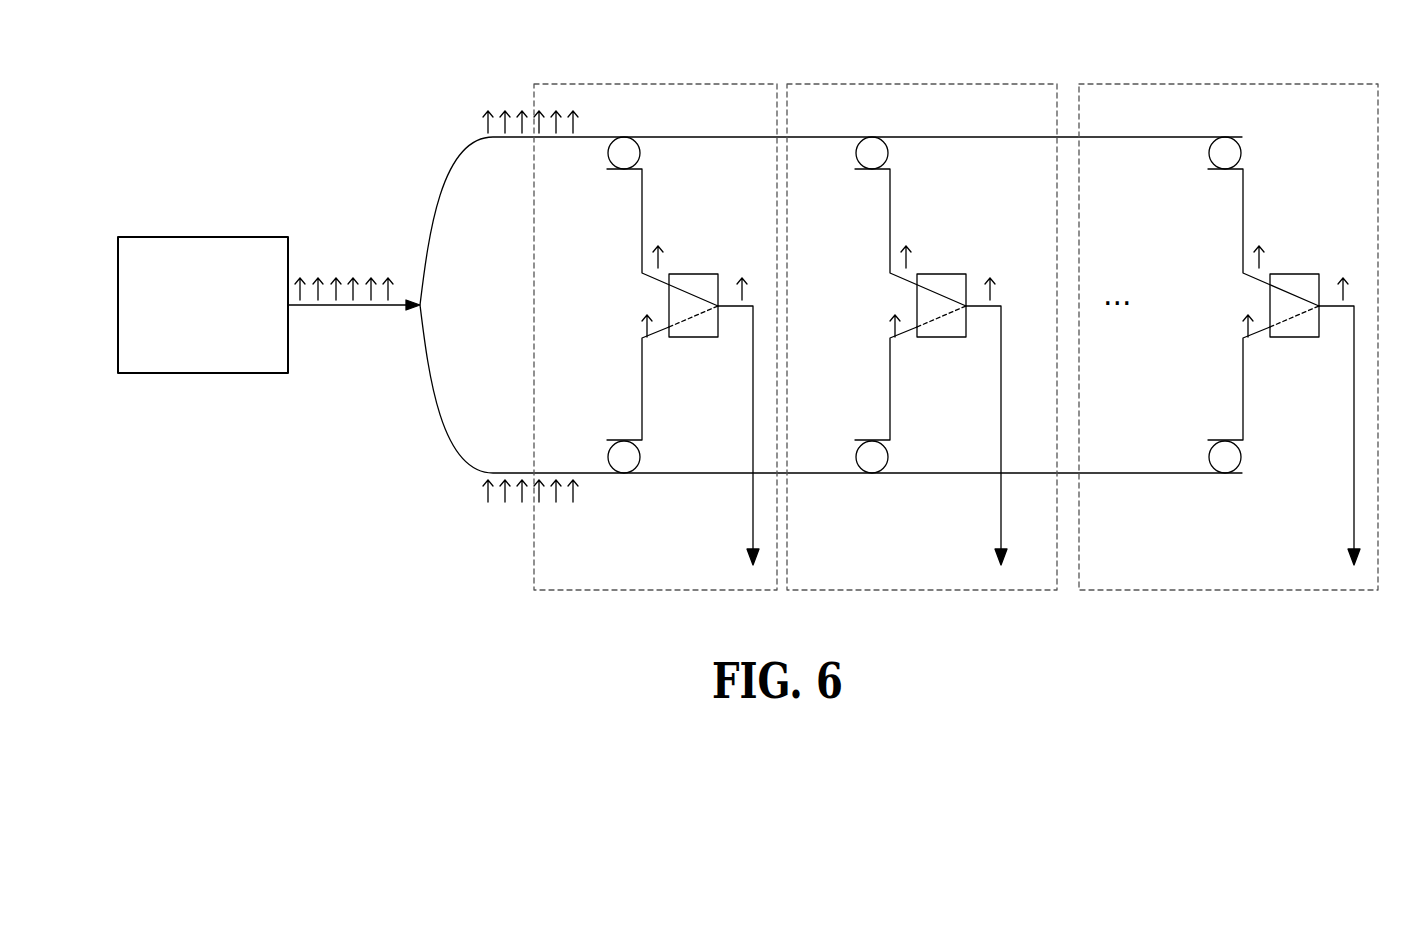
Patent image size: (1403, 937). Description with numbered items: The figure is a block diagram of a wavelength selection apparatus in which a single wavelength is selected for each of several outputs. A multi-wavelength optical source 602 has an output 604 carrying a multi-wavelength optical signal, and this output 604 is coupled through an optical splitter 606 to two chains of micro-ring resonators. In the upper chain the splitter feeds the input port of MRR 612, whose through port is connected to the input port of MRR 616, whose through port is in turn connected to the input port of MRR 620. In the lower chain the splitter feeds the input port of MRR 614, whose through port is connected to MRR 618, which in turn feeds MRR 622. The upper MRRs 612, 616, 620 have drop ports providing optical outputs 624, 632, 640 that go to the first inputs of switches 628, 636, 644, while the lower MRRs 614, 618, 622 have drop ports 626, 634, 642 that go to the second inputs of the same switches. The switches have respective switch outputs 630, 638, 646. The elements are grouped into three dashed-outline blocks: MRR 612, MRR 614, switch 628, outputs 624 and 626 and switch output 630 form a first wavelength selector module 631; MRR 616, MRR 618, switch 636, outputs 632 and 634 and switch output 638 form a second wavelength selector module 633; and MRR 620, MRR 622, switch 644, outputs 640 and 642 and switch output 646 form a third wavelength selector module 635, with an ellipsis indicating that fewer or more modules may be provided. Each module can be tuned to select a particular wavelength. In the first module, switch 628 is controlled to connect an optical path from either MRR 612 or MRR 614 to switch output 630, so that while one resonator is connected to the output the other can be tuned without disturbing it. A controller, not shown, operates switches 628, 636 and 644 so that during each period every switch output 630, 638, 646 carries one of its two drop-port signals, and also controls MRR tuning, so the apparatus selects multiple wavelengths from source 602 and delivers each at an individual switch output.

The multi-wavelength optical source 602 is at (203, 305).
The output 604 is at (310, 307).
The optical splitter 606 is at (437, 305).
The MRR 612 is at (608, 158).
The MRR 614 is at (608, 462).
The MRR 616 is at (856, 158).
The MRR 618 is at (856, 462).
The MRR 620 is at (1209, 158).
The MRR 622 is at (1209, 462).
The optical output 624 is at (642, 229).
The drop port 626 is at (642, 385).
The switch 628 is at (698, 274).
The switch output 630 is at (752, 519).
The first wavelength selector module 631 is at (642, 84).
The optical output 632 is at (890, 229).
The second wavelength selector module 633 is at (918, 84).
The drop port 634 is at (890, 385).
The third wavelength selector module 635 is at (1236, 84).
The switch 636 is at (946, 274).
The switch output 638 is at (1000, 519).
The optical output 640 is at (1243, 229).
The drop port 642 is at (1243, 385).
The switch 644 is at (1299, 274).
The switch output 646 is at (1353, 519).